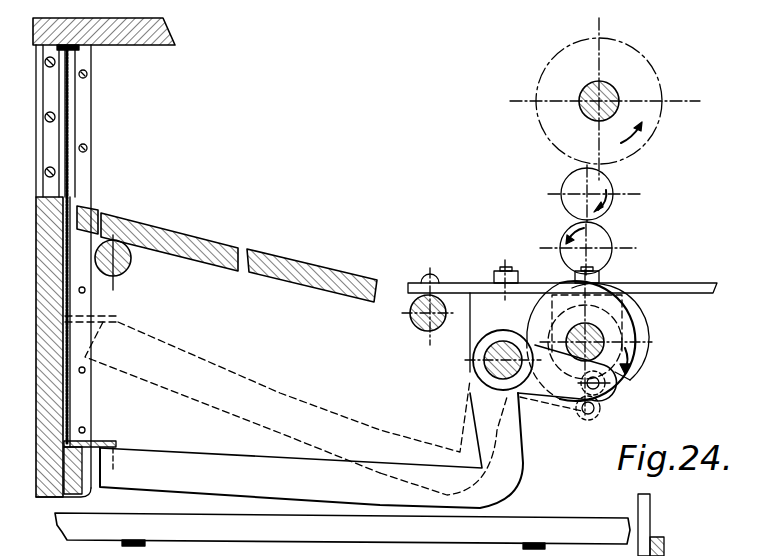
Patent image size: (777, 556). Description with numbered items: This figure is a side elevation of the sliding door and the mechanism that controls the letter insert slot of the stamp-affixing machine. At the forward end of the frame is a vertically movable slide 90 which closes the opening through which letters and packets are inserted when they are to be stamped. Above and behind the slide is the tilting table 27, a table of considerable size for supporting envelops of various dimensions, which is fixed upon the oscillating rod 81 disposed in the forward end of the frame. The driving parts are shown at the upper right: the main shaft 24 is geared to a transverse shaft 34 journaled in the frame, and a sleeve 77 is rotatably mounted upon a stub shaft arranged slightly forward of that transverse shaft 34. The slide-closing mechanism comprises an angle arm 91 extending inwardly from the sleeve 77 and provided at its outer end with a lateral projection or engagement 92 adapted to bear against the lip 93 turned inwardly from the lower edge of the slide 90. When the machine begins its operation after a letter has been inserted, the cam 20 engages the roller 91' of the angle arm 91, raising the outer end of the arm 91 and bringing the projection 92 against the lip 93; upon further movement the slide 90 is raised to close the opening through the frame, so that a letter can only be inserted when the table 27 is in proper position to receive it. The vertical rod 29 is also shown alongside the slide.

The main shaft 24 is at (609, 92).
The tilting table 27 is at (305, 268).
The oscillating rod 81 is at (131, 262).
The slide 90 is at (73, 308).
The vertical rod 29 is at (66, 400).
The lip 93 is at (116, 443).
The lateral projection 92 is at (108, 465).
The angle arm 91 is at (358, 426).
The sleeve 77 is at (478, 370).
The cam 20 is at (636, 330).
The transverse shaft 34 is at (606, 365).
The roller 91' is at (620, 395).